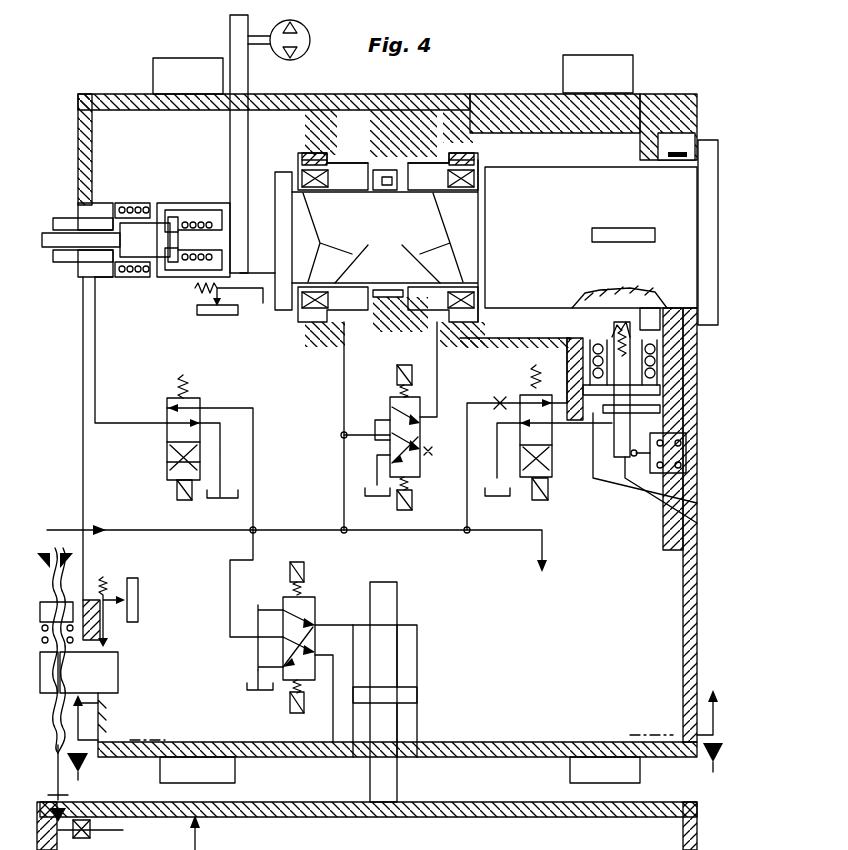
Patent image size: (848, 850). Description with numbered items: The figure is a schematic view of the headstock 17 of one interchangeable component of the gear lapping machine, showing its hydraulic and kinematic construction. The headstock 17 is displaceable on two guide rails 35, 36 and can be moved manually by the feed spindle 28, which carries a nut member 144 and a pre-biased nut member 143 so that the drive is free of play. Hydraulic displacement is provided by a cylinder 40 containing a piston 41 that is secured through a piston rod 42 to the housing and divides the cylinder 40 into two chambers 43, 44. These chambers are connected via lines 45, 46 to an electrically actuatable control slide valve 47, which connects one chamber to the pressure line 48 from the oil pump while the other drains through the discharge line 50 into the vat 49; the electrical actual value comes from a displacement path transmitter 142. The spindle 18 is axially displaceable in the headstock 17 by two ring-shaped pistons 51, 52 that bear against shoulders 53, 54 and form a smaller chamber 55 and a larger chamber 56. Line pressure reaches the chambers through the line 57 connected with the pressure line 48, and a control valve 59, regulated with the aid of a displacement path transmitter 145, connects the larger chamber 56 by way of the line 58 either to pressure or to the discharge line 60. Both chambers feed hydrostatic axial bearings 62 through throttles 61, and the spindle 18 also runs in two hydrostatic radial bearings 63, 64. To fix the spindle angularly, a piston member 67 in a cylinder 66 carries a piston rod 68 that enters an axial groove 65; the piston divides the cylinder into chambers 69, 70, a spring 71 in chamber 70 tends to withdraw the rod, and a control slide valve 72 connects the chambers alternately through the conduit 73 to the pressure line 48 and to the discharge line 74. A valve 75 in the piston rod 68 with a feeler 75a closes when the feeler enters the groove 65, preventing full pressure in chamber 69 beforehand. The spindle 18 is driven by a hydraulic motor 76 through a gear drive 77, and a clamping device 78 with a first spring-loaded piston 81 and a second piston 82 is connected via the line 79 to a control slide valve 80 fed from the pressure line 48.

The headstock 17 is at (120, 486).
The spindle 18 is at (706, 140).
The feed spindle 28 is at (60, 778).
The guide rail 35 is at (155, 73).
The guide rail 36 is at (594, 64).
The cylinder 40 is at (420, 637).
The piston 41 is at (367, 695).
The piston rod 42 is at (388, 785).
The chamber 43 is at (410, 672).
The chamber 44 is at (407, 740).
The conduit 45 is at (338, 625).
The conduit 46 is at (335, 725).
The control slide valve 47 is at (308, 598).
The pressure line 48 is at (227, 573).
The vat 49 is at (256, 704).
The discharge line 50 is at (258, 675).
The ring-shaped piston 51 is at (318, 175).
The ring-shaped piston 52 is at (468, 170).
The shoulder 53 is at (295, 172).
The shoulder 54 is at (500, 160).
The smaller chamber 55 is at (350, 172).
The larger chamber 56 is at (437, 167).
The line 57 is at (344, 393).
The line 58 is at (437, 380).
The control valve 59 is at (392, 405).
The discharge line 60 is at (378, 481).
The throttle 61 is at (443, 187).
The hydrostatic axial bearing 62 is at (398, 254).
The hydrostatic radial bearing 63 is at (673, 150).
The hydrostatic radial bearing 64 is at (383, 168).
The groove 65 is at (620, 228).
The cylinder 66 is at (688, 460).
The piston member 67 is at (685, 430).
The piston rod 68 is at (697, 503).
The chamber 69 is at (700, 521).
The chamber 70 is at (680, 365).
The spring 71 is at (680, 395).
The control slide valve 72 is at (553, 477).
The conduit 73 is at (467, 497).
The discharge line 74 is at (497, 480).
The valve 75 is at (688, 350).
The feeler 75a is at (697, 328).
The hydraulic motor 76 is at (279, 58).
The gear drive 77 is at (236, 57).
The clamping device 78 is at (130, 287).
The line 79 is at (95, 365).
The control slide valve 80 is at (167, 417).
The first spring-loaded piston 81 is at (172, 240).
The second spring-loaded piston 82 is at (110, 265).
The displacement path transmitter 142 is at (139, 600).
The pre-biased nut member 143 is at (75, 677).
The nut member 144 is at (73, 605).
The displacement path transmitter 145 is at (218, 313).